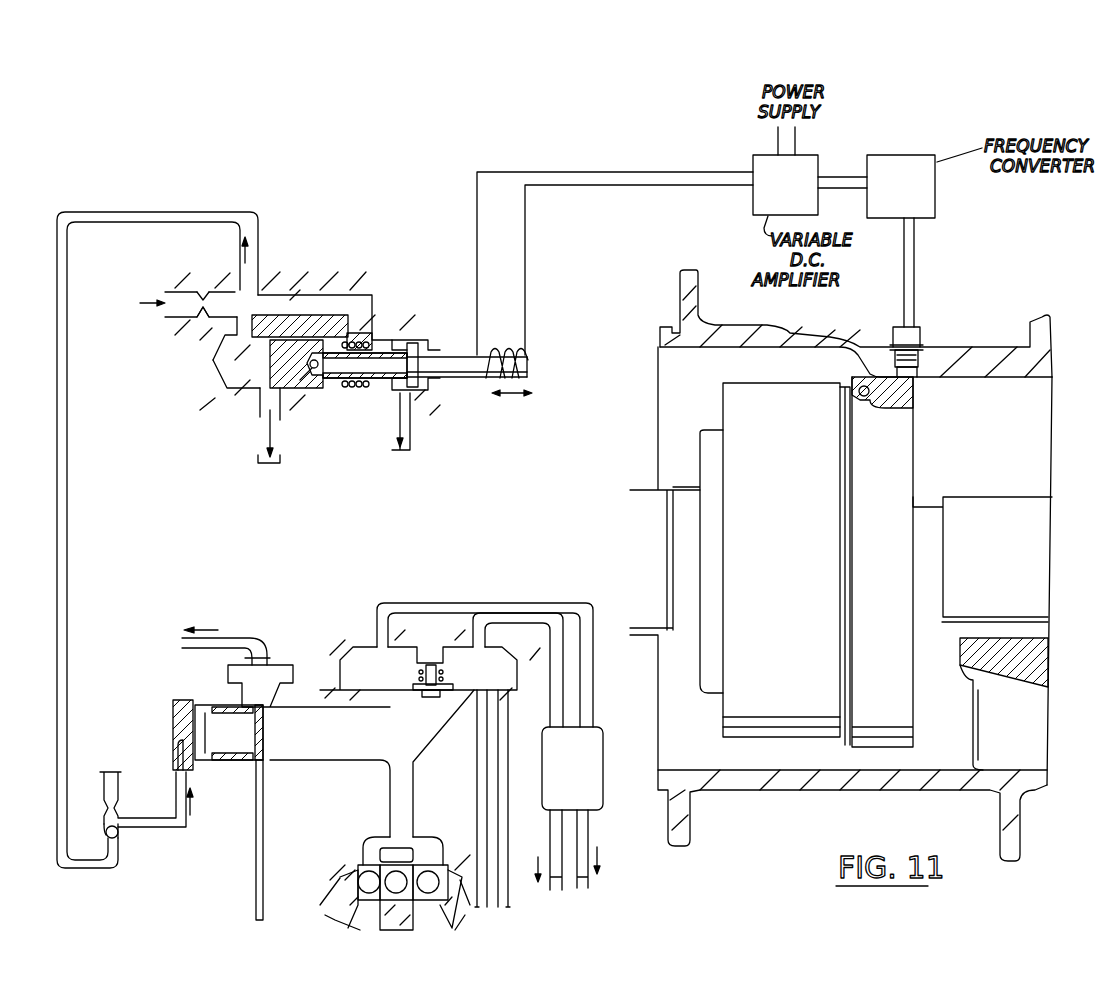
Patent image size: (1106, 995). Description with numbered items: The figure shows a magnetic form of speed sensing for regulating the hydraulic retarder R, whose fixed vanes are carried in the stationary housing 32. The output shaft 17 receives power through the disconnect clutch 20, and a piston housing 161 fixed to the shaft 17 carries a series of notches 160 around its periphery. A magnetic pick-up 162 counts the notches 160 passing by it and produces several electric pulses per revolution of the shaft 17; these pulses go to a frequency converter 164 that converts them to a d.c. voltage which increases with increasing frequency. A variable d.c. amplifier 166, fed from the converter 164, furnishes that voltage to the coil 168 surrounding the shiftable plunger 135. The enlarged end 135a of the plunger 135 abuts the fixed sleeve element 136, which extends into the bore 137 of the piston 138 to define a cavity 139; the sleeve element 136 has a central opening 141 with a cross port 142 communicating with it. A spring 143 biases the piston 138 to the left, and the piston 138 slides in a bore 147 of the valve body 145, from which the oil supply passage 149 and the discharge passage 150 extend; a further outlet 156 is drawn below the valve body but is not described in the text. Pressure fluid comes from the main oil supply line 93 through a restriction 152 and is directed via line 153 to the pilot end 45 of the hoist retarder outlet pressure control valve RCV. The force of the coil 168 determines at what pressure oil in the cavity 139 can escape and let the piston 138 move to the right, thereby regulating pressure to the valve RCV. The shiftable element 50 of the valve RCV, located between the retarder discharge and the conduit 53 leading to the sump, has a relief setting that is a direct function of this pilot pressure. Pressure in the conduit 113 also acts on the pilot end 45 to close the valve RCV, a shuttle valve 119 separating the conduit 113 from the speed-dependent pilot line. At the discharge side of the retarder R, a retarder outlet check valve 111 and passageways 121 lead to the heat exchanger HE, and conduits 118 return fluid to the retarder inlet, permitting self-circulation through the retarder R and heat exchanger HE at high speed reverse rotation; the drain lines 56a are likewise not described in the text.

The shaft 17 is at (1018, 567).
The disconnect clutch 20 is at (774, 742).
The stationary housing 32 is at (455, 857).
The pilot end 45 is at (192, 715).
The shiftable element 50 is at (228, 705).
The conduit 53 is at (230, 645).
The drain pipes 56a is at (508, 863).
The main oil supply line 93 is at (167, 308).
The retarder outlet check valve 111 is at (466, 684).
The conduit 113 is at (115, 787).
The conduits 118 is at (552, 881).
The shuttle valve 119 is at (118, 836).
The passageways 121 is at (472, 620).
The shiftable plunger 135 is at (532, 373).
The enlarged end 135a is at (410, 340).
The fixed sleeve element 136 is at (390, 380).
The bore 137 is at (313, 357).
The piston 138 is at (270, 362).
The cavity 139 is at (313, 388).
The central opening 141 is at (381, 360).
The cross port 142 is at (360, 343).
The spring 143 is at (355, 380).
The valve body 145 is at (268, 323).
The bore 147 is at (232, 388).
The oil supply passage 149 is at (243, 323).
The discharge passage 150 is at (260, 420).
The restriction 152 is at (200, 300).
The line 153 is at (240, 265).
The drain outlet 156 is at (401, 412).
The notches 160 is at (913, 382).
The piston housing 161 is at (906, 398).
The magnetic pick-up 162 is at (911, 369).
The frequency converter 164 is at (937, 207).
The variable d.c. amplifier 166 is at (752, 200).
The coil 168 is at (486, 382).
The hoist retarder outlet pressure control valve RCV is at (183, 698).
The hydraulic retarder R is at (418, 833).
The heat exchanger HE is at (590, 771).